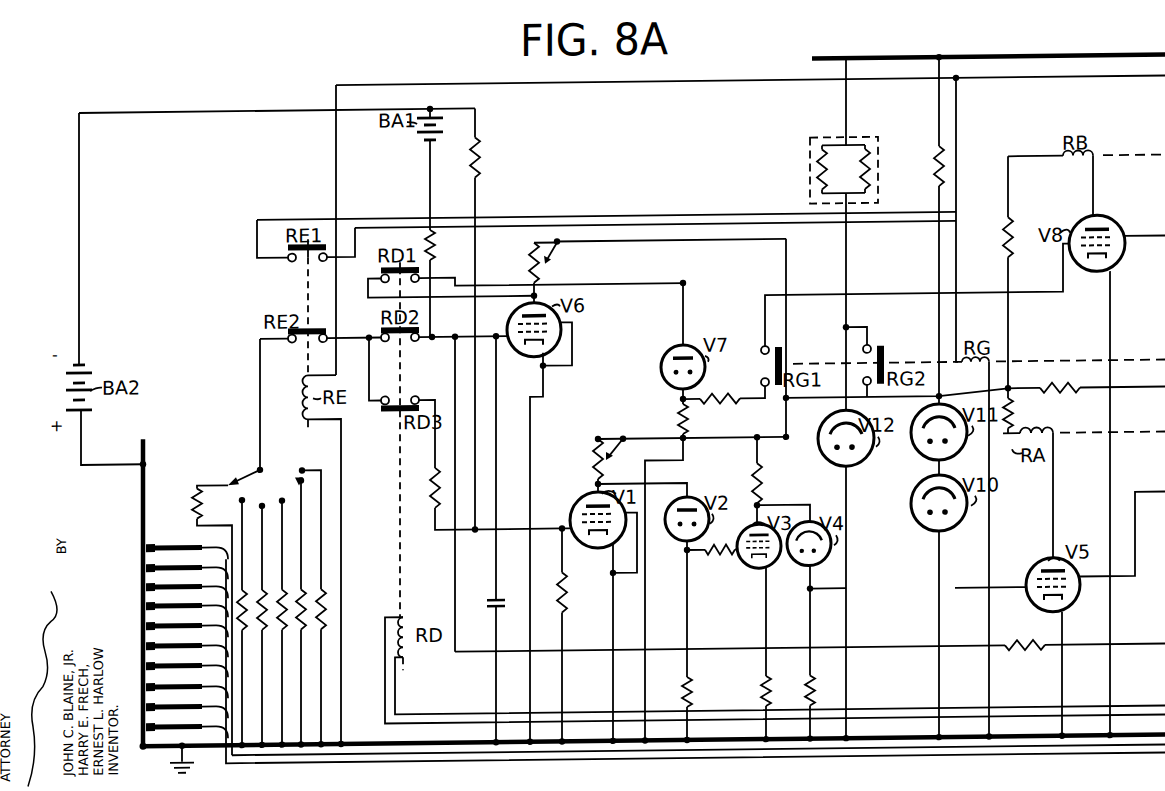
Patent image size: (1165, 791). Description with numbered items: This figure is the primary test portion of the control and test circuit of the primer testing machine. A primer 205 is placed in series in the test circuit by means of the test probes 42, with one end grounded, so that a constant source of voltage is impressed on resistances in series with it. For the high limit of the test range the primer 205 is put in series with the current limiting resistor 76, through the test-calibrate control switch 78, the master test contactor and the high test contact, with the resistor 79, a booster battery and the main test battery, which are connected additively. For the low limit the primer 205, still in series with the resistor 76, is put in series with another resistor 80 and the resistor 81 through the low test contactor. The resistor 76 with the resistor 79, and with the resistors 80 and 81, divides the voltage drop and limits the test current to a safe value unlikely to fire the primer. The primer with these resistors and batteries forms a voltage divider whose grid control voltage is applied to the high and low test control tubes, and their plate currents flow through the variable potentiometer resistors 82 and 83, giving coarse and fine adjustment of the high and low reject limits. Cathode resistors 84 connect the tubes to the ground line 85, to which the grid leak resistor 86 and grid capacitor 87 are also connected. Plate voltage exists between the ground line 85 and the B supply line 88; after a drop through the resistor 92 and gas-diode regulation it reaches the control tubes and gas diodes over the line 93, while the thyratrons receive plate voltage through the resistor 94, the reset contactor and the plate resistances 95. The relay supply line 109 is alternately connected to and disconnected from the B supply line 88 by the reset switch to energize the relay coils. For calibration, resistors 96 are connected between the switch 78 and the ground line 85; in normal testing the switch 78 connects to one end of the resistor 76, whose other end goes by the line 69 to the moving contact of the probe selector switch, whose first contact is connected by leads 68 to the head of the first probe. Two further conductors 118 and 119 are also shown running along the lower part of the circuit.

The relay supply line 109 is at (478, 82).
The B supply line 88 is at (913, 61).
The resistor 94 is at (846, 146).
The resistor 92 is at (932, 174).
The plate resistances 95 is at (997, 244).
The resistor 81 is at (479, 166).
The resistor 79 is at (440, 256).
The variable potentiometer resistor 82 is at (528, 268).
The line 93 is at (684, 241).
The cathode resistors 84 is at (680, 422).
The variable potentiometer resistor 83 is at (588, 462).
The resistor 80 is at (430, 485).
The test-calibrate control switch 78 is at (250, 458).
The current limiting resistor 76 is at (192, 499).
The primer 205 is at (146, 562).
The test probes 42 is at (158, 544).
The resistors 96 is at (248, 582).
The grid capacitor 87 is at (484, 605).
The grid leak resistor 86 is at (558, 582).
The ground line 85 is at (400, 740).
The leads 68 is at (438, 762).
The line 69 is at (500, 760).
The conductor 118 is at (866, 710).
The conductor 119 is at (883, 720).